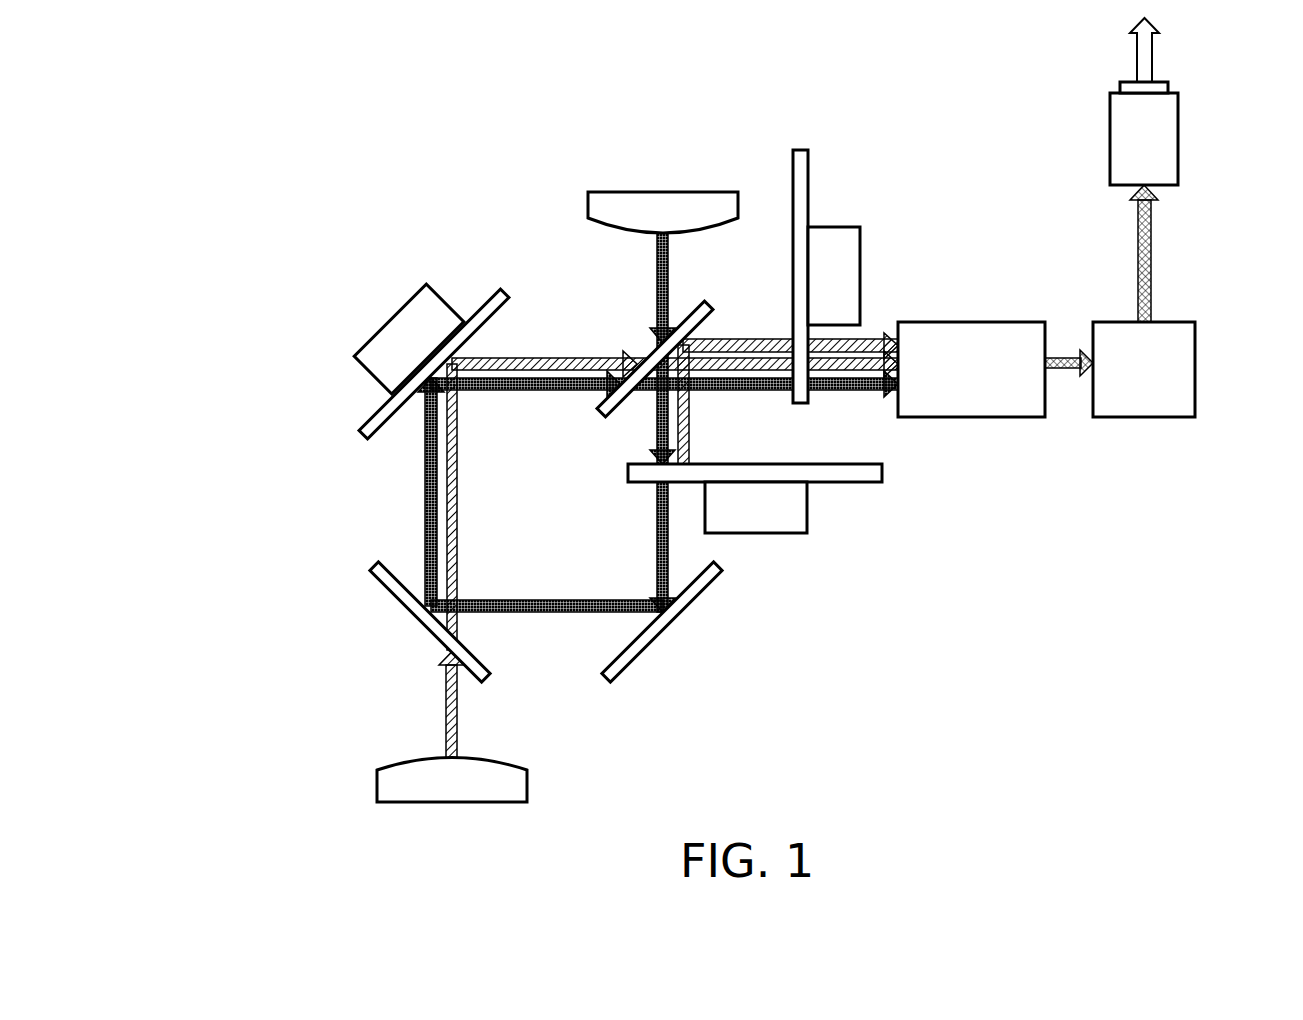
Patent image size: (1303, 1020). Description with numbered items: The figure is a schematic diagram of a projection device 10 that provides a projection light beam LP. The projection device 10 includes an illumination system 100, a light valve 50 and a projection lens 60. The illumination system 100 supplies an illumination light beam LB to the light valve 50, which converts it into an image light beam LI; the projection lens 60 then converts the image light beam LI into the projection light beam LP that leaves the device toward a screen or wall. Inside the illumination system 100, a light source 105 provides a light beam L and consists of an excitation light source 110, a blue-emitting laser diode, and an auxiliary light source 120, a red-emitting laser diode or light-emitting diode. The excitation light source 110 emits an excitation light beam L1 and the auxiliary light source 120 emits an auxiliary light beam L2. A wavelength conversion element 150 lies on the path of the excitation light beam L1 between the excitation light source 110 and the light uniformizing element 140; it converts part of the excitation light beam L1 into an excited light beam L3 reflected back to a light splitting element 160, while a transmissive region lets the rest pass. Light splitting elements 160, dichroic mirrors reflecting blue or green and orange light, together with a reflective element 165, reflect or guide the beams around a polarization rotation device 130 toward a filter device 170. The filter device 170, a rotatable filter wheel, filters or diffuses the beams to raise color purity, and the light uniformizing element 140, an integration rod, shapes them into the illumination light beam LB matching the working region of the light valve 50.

The projection device 10 is at (1270, 684).
The light valve 50 is at (1190, 385).
The projection lens 60 is at (1170, 153).
The illumination system 100 is at (475, 198).
The light source 105 is at (142, 55).
The excitation light source 110 is at (665, 210).
The auxiliary light source 120 is at (388, 783).
The polarization rotation device 130 is at (403, 331).
The light uniformizing element 140 is at (970, 407).
The wavelength conversion element 150 is at (793, 508).
The light splitting element 160 is at (600, 414).
The reflective element 165 is at (695, 590).
The filter device 170 is at (830, 240).
The light beam L is at (142, 165).
The excitation light beam L1 is at (658, 293).
The auxiliary light beam L2 is at (447, 712).
The excited light beam L3 is at (686, 435).
The illumination light beam LB is at (1060, 372).
The image light beam LI is at (1150, 269).
The projection light beam LP is at (1146, 54).